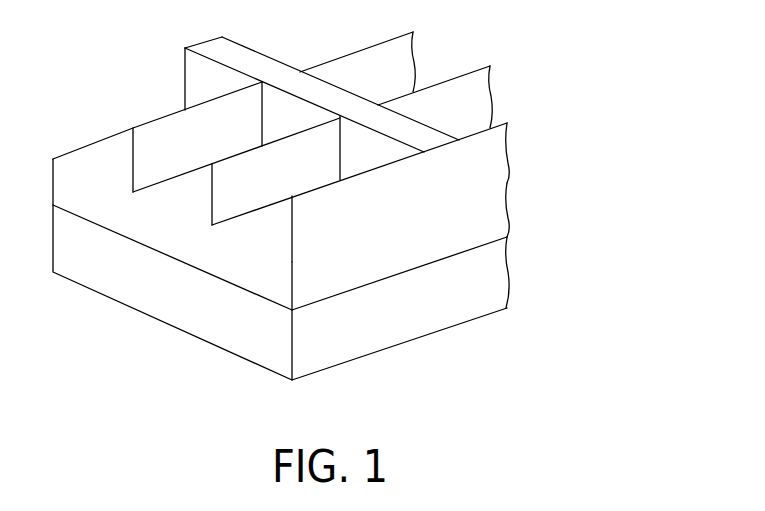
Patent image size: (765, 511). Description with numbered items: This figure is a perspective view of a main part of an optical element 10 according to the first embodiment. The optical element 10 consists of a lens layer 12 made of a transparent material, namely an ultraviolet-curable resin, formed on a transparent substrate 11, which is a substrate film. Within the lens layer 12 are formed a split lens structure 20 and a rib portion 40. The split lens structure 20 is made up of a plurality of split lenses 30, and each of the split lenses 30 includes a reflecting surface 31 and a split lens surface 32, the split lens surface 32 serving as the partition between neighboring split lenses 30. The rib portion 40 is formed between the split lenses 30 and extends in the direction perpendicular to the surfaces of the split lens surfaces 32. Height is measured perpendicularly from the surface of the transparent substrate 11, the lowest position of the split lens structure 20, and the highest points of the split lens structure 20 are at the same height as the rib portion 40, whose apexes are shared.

The optical element 10 is at (307, 292).
The transparent substrate 11 is at (498, 278).
The lens layer 12 is at (360, 144).
The split lens structure 20 is at (497, 200).
The split lenses 30 is at (303, 177).
The reflecting surface 31 is at (262, 133).
The split lens surface 32 is at (413, 58).
The rib portion 40 is at (248, 58).